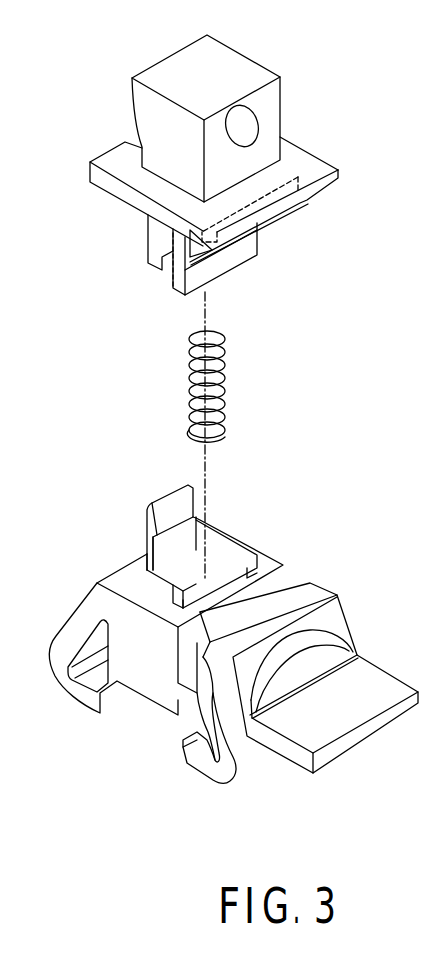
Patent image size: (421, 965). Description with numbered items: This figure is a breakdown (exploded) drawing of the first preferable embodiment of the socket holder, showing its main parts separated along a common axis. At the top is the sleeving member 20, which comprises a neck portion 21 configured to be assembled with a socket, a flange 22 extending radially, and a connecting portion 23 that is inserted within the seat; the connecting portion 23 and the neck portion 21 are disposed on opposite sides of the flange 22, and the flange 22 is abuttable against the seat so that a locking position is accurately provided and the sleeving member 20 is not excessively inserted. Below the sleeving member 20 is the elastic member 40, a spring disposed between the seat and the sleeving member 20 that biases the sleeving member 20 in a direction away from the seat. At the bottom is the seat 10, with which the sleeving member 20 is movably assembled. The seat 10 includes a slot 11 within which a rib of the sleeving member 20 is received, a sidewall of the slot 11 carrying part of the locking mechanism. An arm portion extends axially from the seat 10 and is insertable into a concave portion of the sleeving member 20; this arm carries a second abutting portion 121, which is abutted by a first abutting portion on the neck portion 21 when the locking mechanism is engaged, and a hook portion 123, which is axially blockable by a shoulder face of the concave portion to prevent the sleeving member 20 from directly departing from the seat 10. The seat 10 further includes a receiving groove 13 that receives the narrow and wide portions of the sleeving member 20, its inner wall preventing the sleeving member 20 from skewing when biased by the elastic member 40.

The seat 10 is at (274, 518).
The slot 11 is at (262, 597).
The second abutting portion 121 is at (177, 508).
The hook portion 123 is at (148, 540).
The receiving groove 13 is at (182, 578).
The sleeving member 20 is at (332, 85).
The neck portion 21 is at (162, 75).
The flange 22 is at (307, 165).
The connecting portion 23 is at (160, 245).
The elastic member 40 is at (226, 386).